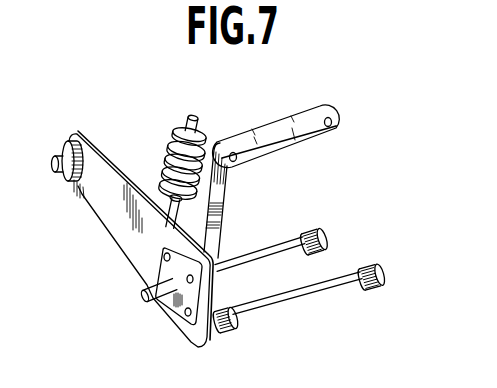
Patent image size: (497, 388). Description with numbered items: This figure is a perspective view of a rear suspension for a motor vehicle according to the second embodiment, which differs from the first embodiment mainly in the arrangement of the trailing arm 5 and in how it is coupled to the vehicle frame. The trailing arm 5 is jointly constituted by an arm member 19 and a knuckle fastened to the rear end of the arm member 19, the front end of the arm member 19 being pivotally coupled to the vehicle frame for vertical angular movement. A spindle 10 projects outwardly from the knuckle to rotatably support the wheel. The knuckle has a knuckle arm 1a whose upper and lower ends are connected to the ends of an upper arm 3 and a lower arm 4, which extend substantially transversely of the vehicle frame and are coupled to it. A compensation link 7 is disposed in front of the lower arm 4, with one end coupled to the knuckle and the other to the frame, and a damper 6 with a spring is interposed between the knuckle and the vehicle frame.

The knuckle arm 1a is at (219, 216).
The upper arm 3 is at (262, 128).
The lower arm 4 is at (300, 297).
The trailing arm 5 is at (100, 229).
The damper 6 is at (182, 127).
The compensation link 7 is at (286, 251).
The spindle 10 is at (156, 298).
The arm member 19 is at (117, 188).